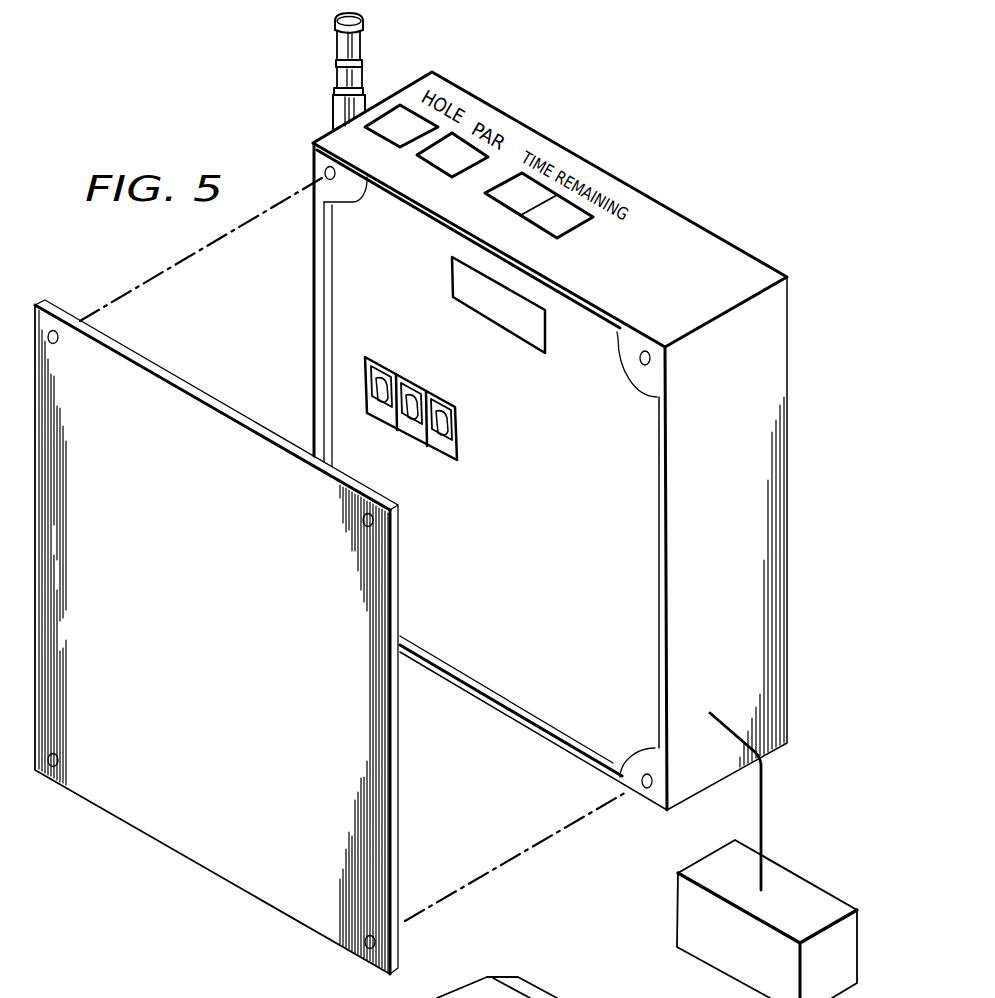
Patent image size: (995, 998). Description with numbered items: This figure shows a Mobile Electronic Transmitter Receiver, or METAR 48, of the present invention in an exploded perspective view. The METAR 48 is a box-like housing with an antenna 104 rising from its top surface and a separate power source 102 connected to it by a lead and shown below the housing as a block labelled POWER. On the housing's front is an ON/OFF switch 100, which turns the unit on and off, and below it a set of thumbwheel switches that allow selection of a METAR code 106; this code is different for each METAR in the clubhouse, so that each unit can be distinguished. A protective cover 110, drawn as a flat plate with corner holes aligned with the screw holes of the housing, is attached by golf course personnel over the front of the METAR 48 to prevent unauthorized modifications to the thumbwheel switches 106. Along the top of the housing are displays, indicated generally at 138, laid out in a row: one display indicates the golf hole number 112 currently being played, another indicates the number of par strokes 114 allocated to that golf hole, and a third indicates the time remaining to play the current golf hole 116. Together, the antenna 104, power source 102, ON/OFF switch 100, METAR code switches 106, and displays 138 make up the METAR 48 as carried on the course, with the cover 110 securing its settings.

The displays 138 is at (678, 152).
The METAR 48 is at (788, 447).
The antenna 104 is at (333, 62).
The golf hole number display 112 is at (391, 134).
The par strokes display 114 is at (431, 159).
The time remaining display 116 is at (508, 201).
The ON/OFF switch 100 is at (453, 283).
The METAR code thumbwheel switches 106 is at (428, 456).
The protective cover 110 is at (147, 822).
The power source 102 is at (679, 892).